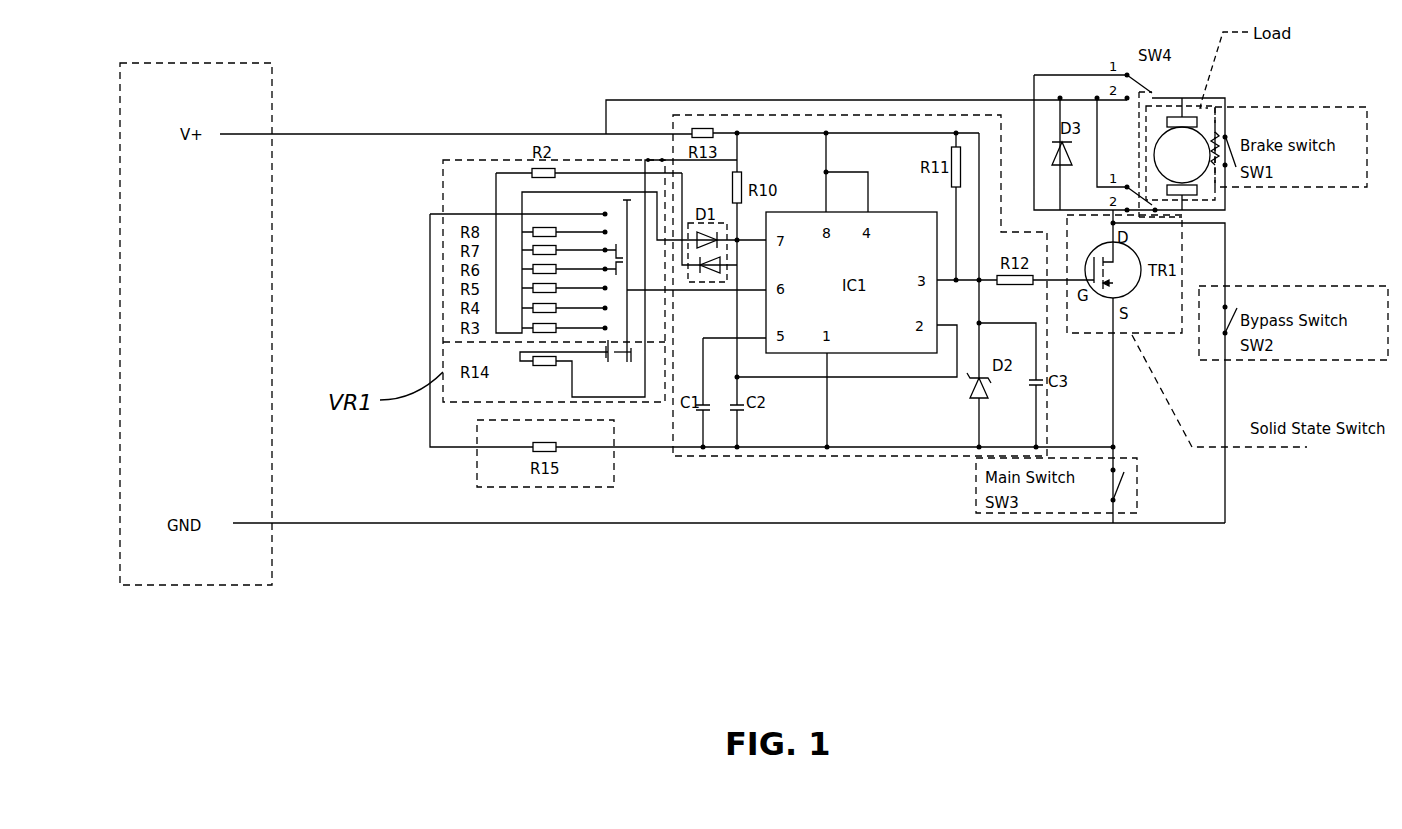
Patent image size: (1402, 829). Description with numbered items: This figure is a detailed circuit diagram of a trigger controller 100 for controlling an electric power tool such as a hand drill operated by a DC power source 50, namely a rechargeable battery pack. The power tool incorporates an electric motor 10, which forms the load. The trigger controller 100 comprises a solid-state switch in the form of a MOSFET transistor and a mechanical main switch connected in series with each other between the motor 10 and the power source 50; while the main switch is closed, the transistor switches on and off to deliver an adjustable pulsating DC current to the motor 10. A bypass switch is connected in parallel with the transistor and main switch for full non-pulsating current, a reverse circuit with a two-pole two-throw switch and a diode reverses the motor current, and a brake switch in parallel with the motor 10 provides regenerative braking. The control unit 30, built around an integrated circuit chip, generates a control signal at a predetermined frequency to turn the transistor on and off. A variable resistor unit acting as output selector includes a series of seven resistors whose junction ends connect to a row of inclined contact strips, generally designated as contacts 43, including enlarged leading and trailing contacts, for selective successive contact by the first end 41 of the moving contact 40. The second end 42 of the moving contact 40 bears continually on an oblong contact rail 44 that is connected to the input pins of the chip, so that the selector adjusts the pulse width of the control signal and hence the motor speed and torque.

The electric motor 10 is at (1194, 140).
The control unit 30 is at (762, 456).
The moving contact 40 is at (620, 253).
The first end 41 is at (607, 354).
The second end 42 is at (633, 357).
The contacts 43 is at (606, 354).
The contact rail 44 is at (627, 200).
The DC power source 50 is at (215, 577).
The trigger controller 100 is at (401, 610).